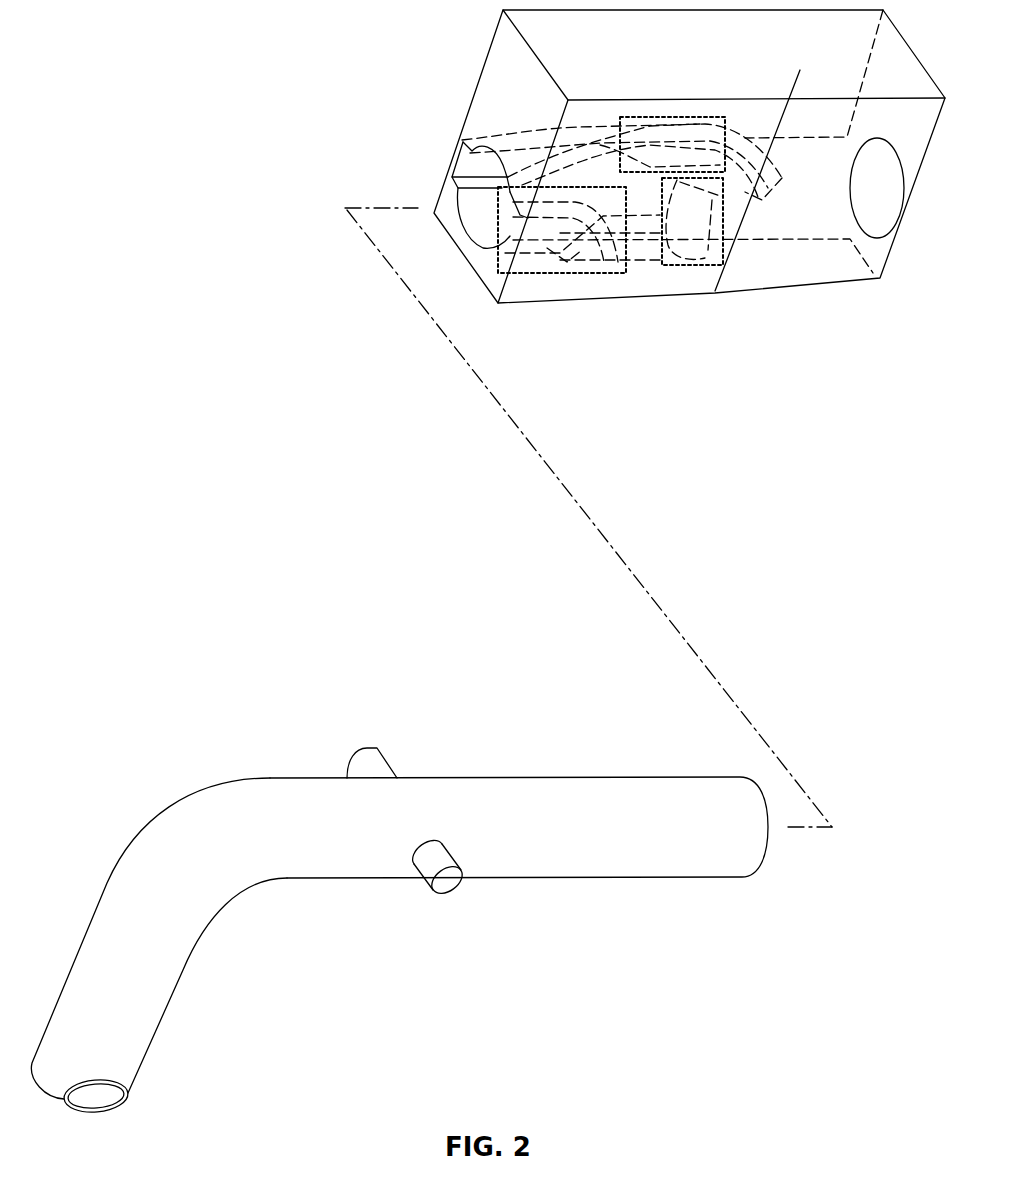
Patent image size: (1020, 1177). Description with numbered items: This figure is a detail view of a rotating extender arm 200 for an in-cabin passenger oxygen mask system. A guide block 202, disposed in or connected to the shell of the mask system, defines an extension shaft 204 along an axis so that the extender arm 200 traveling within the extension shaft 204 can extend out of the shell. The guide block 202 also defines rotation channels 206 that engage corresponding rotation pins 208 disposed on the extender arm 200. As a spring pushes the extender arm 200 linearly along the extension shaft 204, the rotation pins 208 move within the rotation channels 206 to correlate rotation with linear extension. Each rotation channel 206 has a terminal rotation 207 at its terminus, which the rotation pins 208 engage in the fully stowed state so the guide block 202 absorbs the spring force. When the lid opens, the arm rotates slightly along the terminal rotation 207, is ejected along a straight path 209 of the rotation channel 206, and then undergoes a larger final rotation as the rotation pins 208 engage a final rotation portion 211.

The rotating extender arm 200 is at (168, 837).
The guide block 202 is at (502, 82).
The extension shaft 204 is at (487, 228).
The rotation channels 206 is at (756, 119).
The terminal rotation 207 is at (700, 265).
The rotation pins 208 is at (353, 770).
The straight path 209 is at (703, 117).
The final rotation portion 211 is at (580, 275).